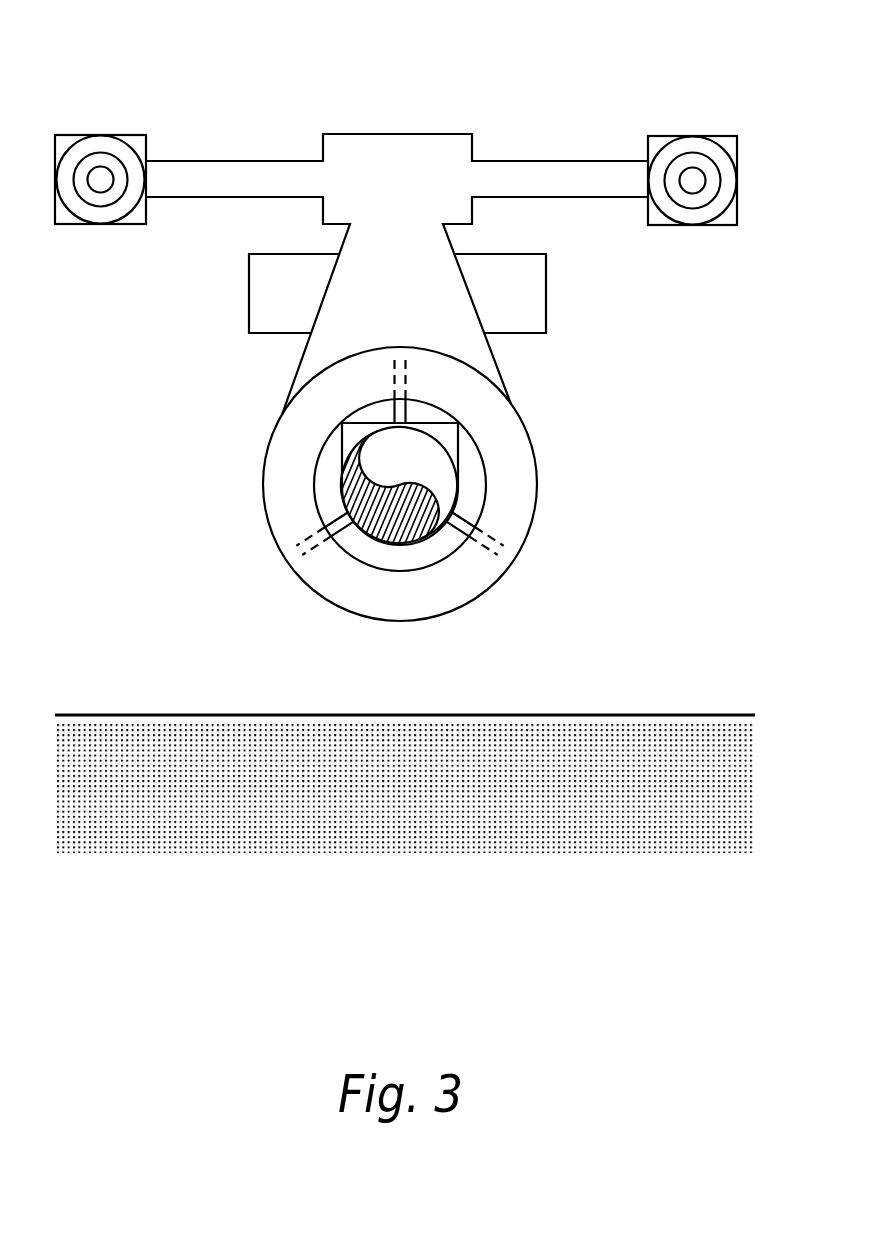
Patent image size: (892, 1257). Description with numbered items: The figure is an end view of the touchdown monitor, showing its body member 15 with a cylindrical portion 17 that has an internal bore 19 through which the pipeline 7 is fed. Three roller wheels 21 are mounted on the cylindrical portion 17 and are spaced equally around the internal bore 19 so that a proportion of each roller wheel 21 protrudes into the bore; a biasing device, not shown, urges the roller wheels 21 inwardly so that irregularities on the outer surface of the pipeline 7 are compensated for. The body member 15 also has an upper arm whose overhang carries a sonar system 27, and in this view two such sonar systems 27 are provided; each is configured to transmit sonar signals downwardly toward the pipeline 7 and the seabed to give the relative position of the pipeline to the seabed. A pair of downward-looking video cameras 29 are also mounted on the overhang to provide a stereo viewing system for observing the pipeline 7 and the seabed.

The pipeline 7 is at (463, 487).
The body member 15 is at (472, 350).
The cylindrical portion 17 is at (418, 593).
The internal bore 19 is at (432, 543).
The roller wheels 21 is at (300, 520).
The sonar system 27 is at (155, 135).
The video cameras 29 is at (635, 135).